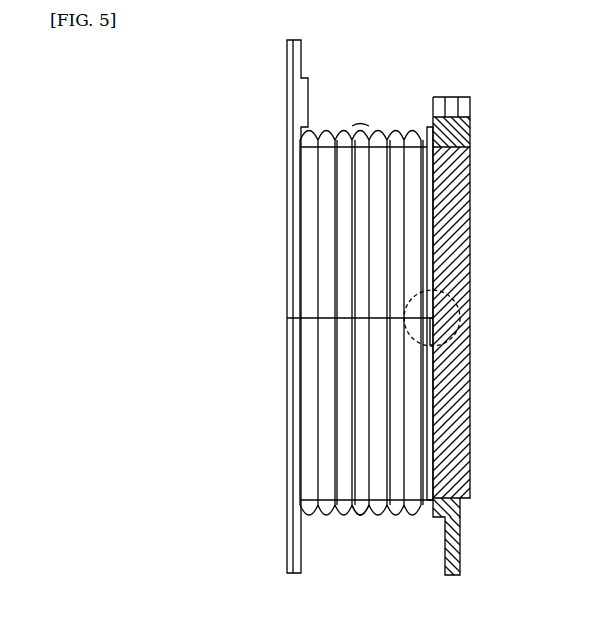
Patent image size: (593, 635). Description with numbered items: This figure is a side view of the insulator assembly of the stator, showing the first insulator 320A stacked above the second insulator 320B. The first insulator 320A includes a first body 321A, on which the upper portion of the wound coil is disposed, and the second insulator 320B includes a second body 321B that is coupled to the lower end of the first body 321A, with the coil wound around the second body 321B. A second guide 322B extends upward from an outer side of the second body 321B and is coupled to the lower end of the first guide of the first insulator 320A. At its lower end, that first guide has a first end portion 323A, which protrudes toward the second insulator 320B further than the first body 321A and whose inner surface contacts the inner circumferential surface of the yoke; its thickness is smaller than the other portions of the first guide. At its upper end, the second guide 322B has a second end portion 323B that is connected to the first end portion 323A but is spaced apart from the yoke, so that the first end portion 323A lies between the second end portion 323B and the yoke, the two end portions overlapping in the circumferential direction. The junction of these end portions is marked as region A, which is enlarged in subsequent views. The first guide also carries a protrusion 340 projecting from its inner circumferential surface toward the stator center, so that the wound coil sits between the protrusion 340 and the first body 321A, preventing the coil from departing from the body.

The first insulator 320A is at (272, 206).
The second insulator 320B is at (272, 421).
The first body 321A is at (362, 143).
The second body 321B is at (357, 504).
The protrusion 340 is at (416, 145).
The region A is at (470, 290).
The first end portion 323A is at (455, 318).
The second end portion 323B is at (448, 345).
The second guide 322B is at (452, 544).